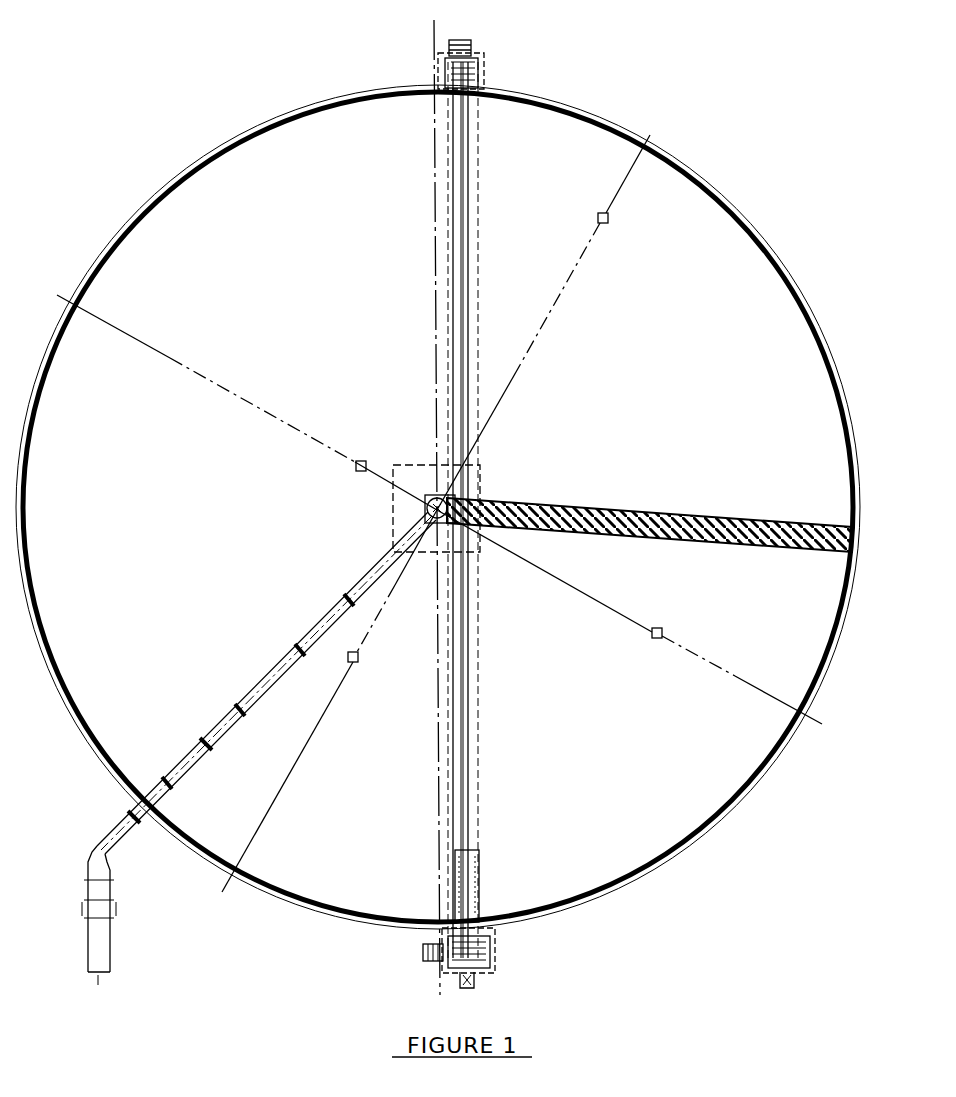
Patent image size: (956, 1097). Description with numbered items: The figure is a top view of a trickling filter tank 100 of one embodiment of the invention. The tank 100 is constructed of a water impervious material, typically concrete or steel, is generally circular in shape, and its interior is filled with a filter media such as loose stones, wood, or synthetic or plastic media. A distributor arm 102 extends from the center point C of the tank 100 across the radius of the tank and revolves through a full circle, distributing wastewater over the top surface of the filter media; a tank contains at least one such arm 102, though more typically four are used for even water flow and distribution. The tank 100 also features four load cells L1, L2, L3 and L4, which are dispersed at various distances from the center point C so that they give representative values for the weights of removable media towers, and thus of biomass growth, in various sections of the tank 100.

The trickling filter tank 100 is at (732, 190).
The distributor arm 102 is at (690, 514).
The load cell L1 is at (358, 460).
The load cell L2 is at (357, 668).
The load cell L3 is at (664, 630).
The load cell L4 is at (612, 228).
The center point C is at (436, 508).